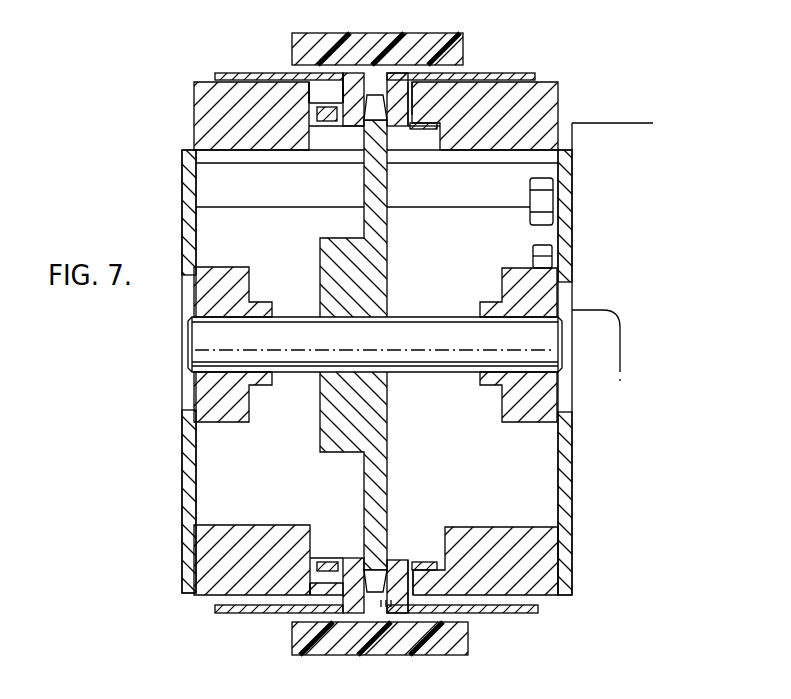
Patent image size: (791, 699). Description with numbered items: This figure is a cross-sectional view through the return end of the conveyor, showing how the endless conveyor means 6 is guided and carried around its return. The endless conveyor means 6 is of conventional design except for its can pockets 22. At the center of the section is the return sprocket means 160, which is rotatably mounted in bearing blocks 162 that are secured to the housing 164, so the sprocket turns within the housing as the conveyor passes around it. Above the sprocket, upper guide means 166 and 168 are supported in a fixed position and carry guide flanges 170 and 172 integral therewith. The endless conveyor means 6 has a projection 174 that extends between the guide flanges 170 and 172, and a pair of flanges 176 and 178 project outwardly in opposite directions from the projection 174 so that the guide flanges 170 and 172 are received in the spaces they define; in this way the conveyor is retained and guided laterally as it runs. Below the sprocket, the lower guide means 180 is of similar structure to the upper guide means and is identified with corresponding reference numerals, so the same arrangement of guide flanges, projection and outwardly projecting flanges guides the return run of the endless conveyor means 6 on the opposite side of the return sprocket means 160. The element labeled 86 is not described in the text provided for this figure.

The endless conveyor means 6 is at (192, 619).
The can pockets 22 is at (459, 48).
The spacer strip 86 is at (510, 80).
The return sprocket means 160 is at (386, 228).
The bearing blocks 162 is at (204, 386).
The housing 164 is at (185, 184).
The upper guide means 166 is at (562, 104).
The upper guide means 168 is at (194, 84).
The guide flange 170 is at (435, 112).
The guide flange 172 is at (316, 112).
The projection 174 is at (382, 90).
The flange 176 is at (412, 118).
The flange 178 is at (335, 124).
The lower guide means 180 is at (156, 541).